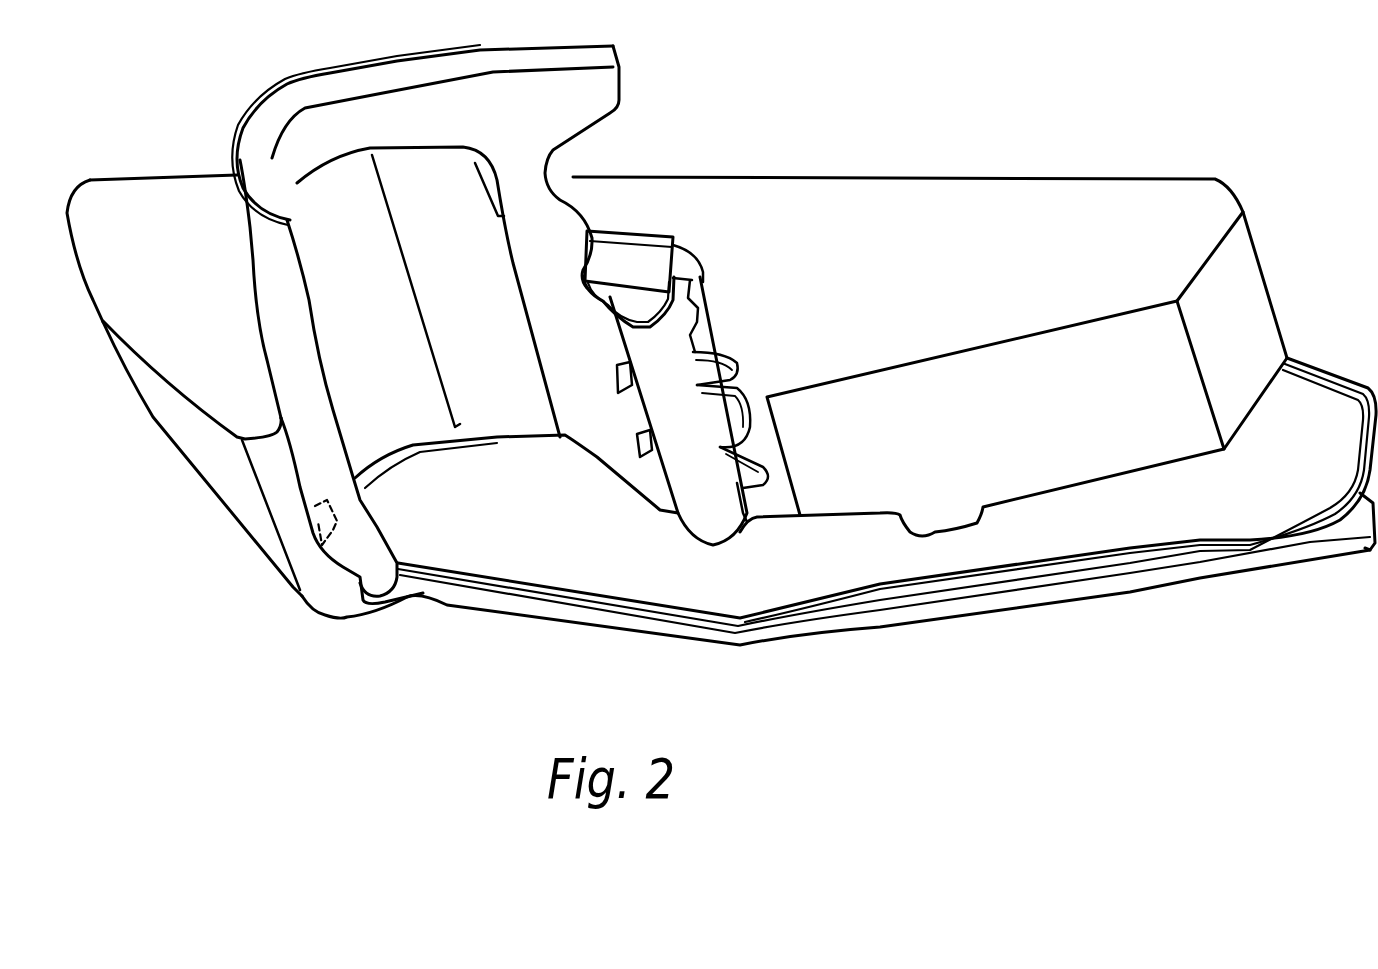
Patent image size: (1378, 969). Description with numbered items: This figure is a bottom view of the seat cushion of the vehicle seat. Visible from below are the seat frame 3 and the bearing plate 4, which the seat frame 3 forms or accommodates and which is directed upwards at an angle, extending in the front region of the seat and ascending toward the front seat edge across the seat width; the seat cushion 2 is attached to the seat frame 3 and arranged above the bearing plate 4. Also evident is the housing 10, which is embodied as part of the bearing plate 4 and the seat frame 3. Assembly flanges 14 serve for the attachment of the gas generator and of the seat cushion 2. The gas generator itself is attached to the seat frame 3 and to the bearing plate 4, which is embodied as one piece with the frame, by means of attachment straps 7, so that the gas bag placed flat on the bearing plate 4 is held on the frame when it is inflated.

The seat cushion 2 is at (121, 195).
The seat frame 3 is at (262, 155).
The bearing plate 4 is at (490, 213).
The attachment straps 7 is at (632, 450).
The housing 10 is at (697, 507).
The assembly flanges 14 is at (740, 424).